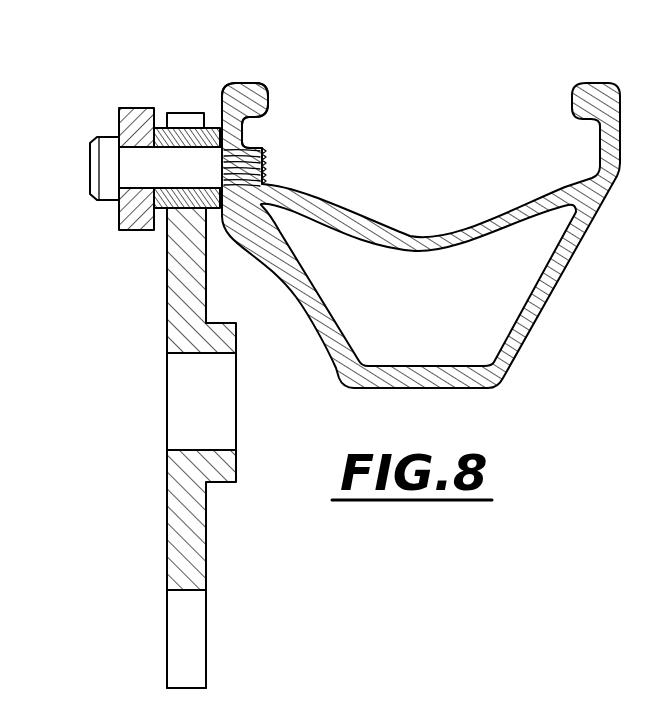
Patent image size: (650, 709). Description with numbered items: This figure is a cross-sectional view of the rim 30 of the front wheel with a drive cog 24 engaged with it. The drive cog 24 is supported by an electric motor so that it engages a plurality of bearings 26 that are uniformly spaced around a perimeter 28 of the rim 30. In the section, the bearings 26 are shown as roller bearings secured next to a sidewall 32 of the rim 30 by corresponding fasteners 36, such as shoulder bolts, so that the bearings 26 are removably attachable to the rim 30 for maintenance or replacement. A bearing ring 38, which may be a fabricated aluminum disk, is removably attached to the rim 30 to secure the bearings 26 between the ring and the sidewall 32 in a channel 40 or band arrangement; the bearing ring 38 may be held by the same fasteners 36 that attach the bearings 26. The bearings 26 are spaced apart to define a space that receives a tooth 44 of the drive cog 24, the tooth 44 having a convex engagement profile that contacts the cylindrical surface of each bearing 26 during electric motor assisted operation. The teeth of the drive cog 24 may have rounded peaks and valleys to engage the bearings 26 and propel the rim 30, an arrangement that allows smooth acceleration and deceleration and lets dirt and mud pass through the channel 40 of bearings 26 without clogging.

The drive cog 24 is at (180, 512).
The bearings 26 is at (163, 127).
The perimeter 28 is at (126, 194).
The rim 30 is at (328, 212).
The sidewall 32 is at (222, 110).
The fasteners 36 is at (108, 170).
The bearing ring 38 is at (128, 120).
The channel 40 is at (231, 62).
The tooth 44 is at (183, 116).